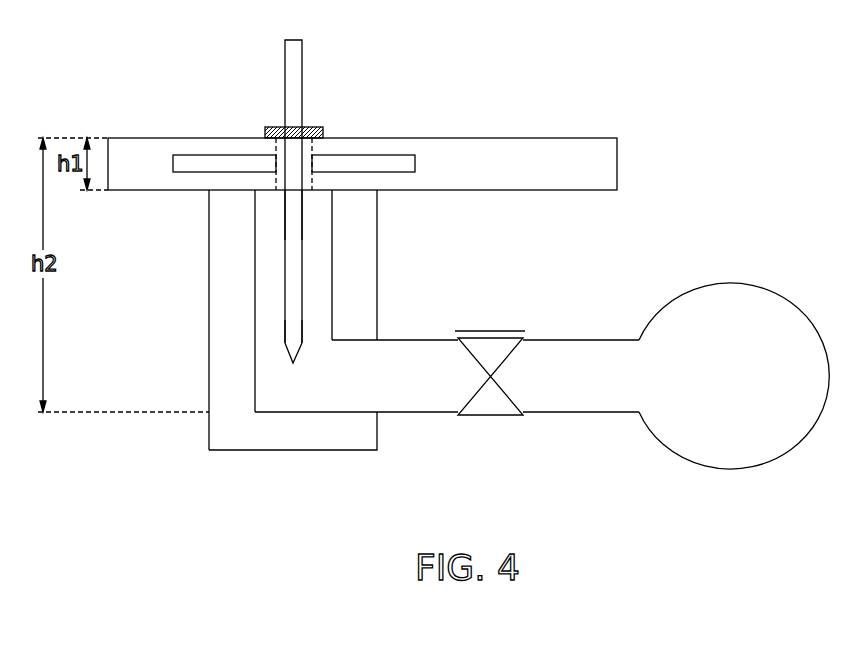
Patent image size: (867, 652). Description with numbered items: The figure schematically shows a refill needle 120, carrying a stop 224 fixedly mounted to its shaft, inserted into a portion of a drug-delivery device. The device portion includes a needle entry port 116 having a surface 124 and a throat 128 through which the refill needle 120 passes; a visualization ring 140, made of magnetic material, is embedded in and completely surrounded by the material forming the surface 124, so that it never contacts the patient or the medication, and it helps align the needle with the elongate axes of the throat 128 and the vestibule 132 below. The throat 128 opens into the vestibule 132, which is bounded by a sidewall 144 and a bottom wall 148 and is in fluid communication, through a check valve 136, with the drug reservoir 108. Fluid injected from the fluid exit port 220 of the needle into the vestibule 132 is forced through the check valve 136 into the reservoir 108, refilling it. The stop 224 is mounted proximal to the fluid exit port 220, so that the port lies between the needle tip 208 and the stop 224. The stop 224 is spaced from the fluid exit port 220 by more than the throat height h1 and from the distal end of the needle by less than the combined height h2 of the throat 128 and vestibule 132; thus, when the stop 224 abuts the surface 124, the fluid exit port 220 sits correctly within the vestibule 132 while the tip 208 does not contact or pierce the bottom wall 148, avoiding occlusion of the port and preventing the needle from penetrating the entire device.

The drug reservoir 108 is at (713, 396).
The needle entry port 116 is at (258, 133).
The refill needle 120 is at (285, 66).
The surface 124 is at (603, 163).
The throat 128 is at (277, 191).
The vestibule 132 is at (265, 246).
The check valve 136 is at (494, 418).
The visualization ring 140 is at (179, 156).
The sidewall 144 is at (222, 301).
The bottom wall 148 is at (305, 414).
The needle tip 208 is at (300, 350).
The fluid exit port 220 is at (296, 331).
The stop 224 is at (313, 128).